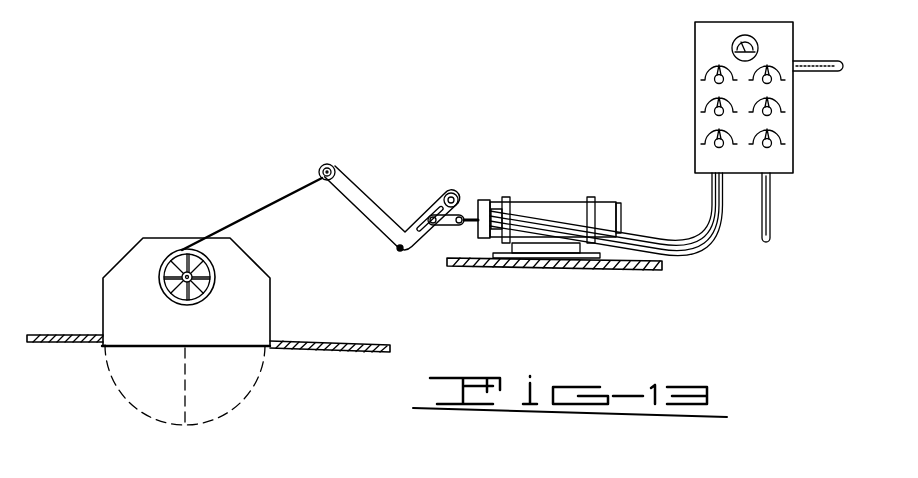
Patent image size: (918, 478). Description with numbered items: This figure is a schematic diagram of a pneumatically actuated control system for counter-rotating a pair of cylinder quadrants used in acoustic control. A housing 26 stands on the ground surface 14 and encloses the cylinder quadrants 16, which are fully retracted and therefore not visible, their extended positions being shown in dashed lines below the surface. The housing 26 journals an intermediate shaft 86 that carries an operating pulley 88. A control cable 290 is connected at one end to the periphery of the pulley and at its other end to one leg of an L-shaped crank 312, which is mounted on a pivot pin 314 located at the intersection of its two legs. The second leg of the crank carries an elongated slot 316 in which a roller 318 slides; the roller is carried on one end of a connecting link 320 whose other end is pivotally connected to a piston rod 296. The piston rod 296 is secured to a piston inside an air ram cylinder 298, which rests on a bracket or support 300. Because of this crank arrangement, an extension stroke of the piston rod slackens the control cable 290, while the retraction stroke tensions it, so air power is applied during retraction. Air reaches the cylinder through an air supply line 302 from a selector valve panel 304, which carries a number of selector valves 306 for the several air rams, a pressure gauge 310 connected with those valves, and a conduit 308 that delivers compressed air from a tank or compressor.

The ground surface 14 is at (48, 337).
The cylinder quadrants 16 is at (213, 398).
The housing 26 is at (137, 263).
The intermediate shaft 86 is at (182, 283).
The operating pulley 88 is at (215, 290).
The control cable 290 is at (268, 204).
The piston rod 296 is at (475, 208).
The air ram cylinder 298 is at (543, 205).
The support 300 is at (540, 249).
The air supply line 302 is at (700, 242).
The selector valve panel 304 is at (707, 95).
The selector valves 306 is at (705, 130).
The conduit 308 is at (820, 62).
The pressure gauge 310 is at (750, 36).
The L-shaped crank 312 is at (347, 183).
The pivot pin 314 is at (400, 251).
The elongated slot 316 is at (448, 194).
The roller 318 is at (427, 212).
The connecting link 320 is at (440, 226).